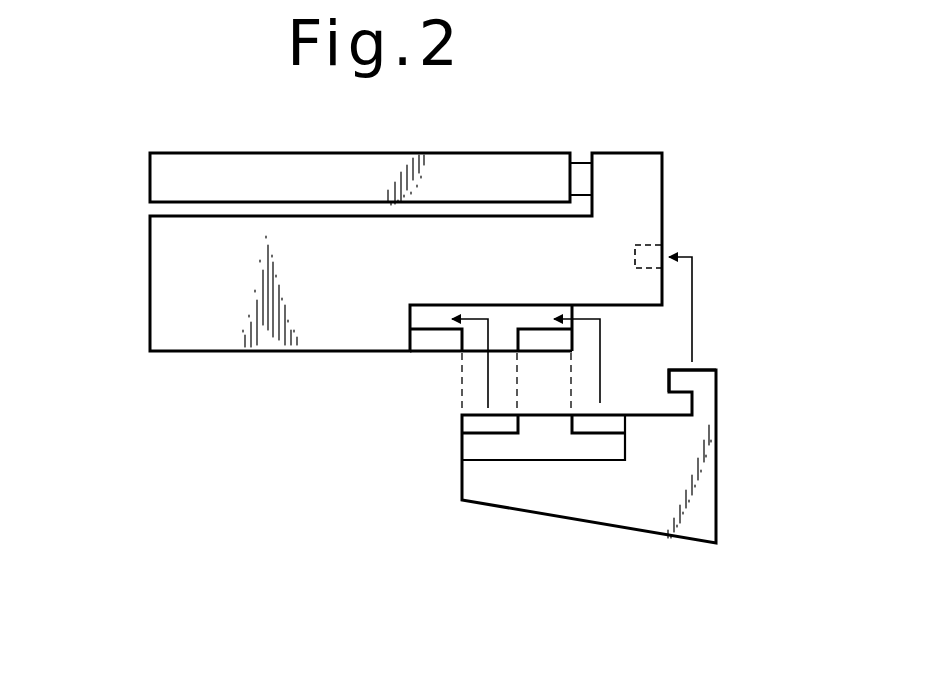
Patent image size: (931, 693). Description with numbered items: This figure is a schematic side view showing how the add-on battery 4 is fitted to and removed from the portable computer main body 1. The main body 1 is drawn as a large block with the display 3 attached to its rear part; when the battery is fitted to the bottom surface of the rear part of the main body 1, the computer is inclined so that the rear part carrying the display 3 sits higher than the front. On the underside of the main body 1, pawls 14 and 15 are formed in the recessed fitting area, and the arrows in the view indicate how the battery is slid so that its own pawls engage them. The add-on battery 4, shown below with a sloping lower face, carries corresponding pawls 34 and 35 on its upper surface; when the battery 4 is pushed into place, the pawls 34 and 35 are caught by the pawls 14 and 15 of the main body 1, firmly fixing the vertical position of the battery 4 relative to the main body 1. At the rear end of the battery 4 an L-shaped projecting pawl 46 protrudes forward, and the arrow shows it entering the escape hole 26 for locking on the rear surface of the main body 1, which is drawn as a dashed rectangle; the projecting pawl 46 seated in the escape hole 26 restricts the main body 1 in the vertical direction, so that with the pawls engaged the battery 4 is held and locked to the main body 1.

The portable computer main body 1 is at (178, 276).
The display 3 is at (173, 180).
The add-on battery 4 is at (636, 536).
The pawl 14 is at (543, 342).
The pawl 15 is at (430, 346).
The escape hole for locking 26 is at (647, 257).
The pawl 34 is at (588, 425).
The pawl 35 is at (477, 423).
The projecting pawl 46 is at (680, 382).